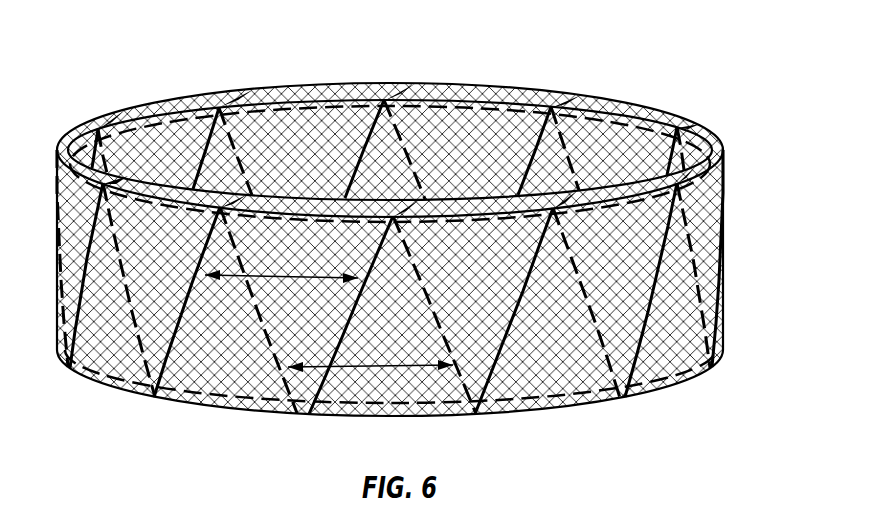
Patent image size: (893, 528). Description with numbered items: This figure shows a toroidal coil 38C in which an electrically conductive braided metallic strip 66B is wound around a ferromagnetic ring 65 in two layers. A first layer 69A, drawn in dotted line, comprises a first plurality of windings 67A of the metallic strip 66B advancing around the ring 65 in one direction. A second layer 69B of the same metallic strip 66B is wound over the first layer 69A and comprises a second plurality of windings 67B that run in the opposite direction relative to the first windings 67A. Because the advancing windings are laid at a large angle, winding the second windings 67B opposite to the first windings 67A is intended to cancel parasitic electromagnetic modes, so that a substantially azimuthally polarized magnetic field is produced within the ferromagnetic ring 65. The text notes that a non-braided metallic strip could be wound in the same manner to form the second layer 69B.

The toroidal coil 38C is at (409, 228).
The ring 65 is at (626, 122).
The metallic strip 66B is at (557, 387).
The first plurality of windings 67A is at (350, 366).
The second plurality of windings 67B is at (275, 274).
The first layer 69A is at (690, 373).
The second layer 69B is at (218, 388).